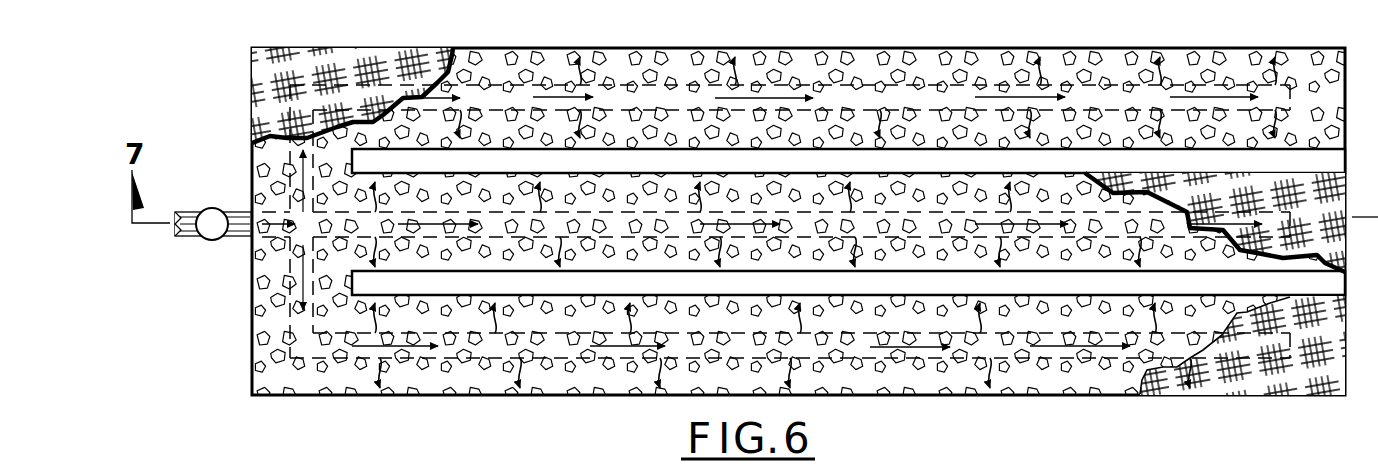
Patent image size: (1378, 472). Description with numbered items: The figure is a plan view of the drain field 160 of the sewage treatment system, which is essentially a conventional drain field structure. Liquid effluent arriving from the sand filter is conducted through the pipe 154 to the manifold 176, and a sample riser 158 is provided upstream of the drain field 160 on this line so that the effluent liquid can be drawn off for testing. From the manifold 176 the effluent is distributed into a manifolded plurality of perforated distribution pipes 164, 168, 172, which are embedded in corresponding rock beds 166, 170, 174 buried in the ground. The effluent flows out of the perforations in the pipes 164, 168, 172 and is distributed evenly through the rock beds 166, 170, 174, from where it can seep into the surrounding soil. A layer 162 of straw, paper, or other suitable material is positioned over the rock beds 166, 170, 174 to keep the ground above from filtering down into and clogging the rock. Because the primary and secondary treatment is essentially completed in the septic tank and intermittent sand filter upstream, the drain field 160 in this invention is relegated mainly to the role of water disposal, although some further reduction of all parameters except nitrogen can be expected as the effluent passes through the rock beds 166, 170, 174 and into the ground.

The pipe 154 is at (182, 237).
The sample riser 158 is at (222, 208).
The drain field 160 is at (749, 47).
The layer 162 is at (455, 58).
The perforated distribution pipe 164 is at (986, 86).
The rock bed 166 is at (1203, 64).
The perforated distribution pipe 168 is at (756, 211).
The rock bed 170 is at (971, 190).
The perforated distribution pipe 172 is at (1010, 380).
The rock bed 174 is at (1120, 383).
The manifold 176 is at (288, 306).